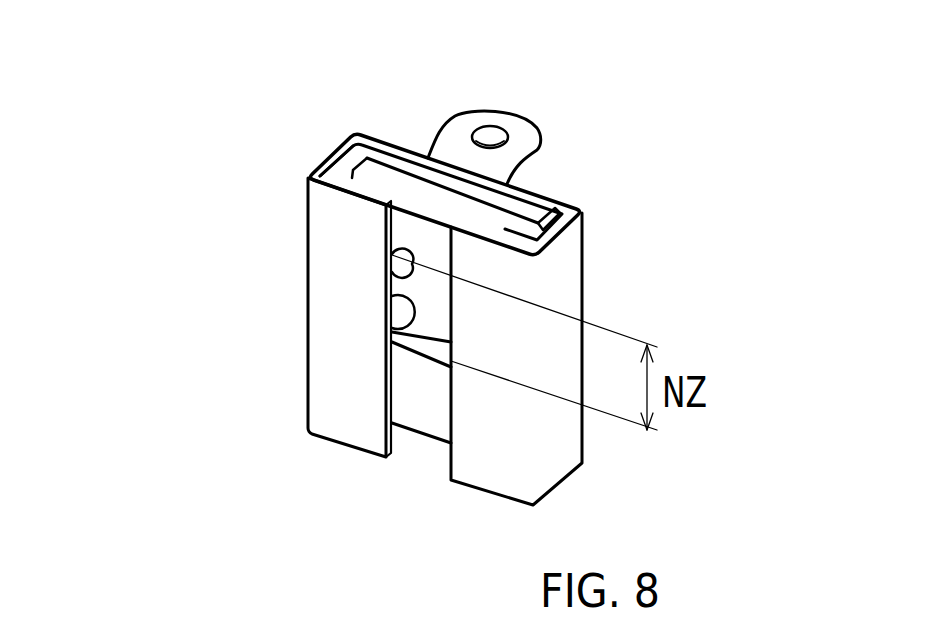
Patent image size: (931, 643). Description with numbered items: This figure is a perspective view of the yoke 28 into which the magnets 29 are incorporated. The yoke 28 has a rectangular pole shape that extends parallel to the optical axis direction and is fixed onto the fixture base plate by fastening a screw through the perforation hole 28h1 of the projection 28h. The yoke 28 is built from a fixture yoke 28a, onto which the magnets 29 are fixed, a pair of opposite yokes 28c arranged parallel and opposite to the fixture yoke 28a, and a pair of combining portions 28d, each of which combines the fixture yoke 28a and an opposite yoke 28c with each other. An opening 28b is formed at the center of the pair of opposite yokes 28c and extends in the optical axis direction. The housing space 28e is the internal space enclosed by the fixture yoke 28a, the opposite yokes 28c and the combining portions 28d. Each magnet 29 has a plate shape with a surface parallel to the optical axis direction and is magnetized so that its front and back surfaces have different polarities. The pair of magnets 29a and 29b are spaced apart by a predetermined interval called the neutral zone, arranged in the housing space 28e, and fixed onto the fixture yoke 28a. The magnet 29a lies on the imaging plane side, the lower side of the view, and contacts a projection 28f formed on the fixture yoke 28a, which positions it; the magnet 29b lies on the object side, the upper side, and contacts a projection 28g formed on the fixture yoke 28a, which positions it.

The yoke 28 is at (527, 124).
The fixture yoke 28a is at (550, 194).
The opening 28b is at (387, 458).
The opposite yoke 28c is at (350, 417).
The combining portion 28d is at (343, 145).
The housing space 28e is at (333, 166).
The projection 28f is at (403, 316).
The projection 28g is at (413, 261).
The projection 28h is at (460, 142).
The perforation hole 28h1 is at (488, 133).
The magnet 29 is at (140, 220).
The magnet 29a is at (408, 393).
The magnet 29b is at (385, 183).